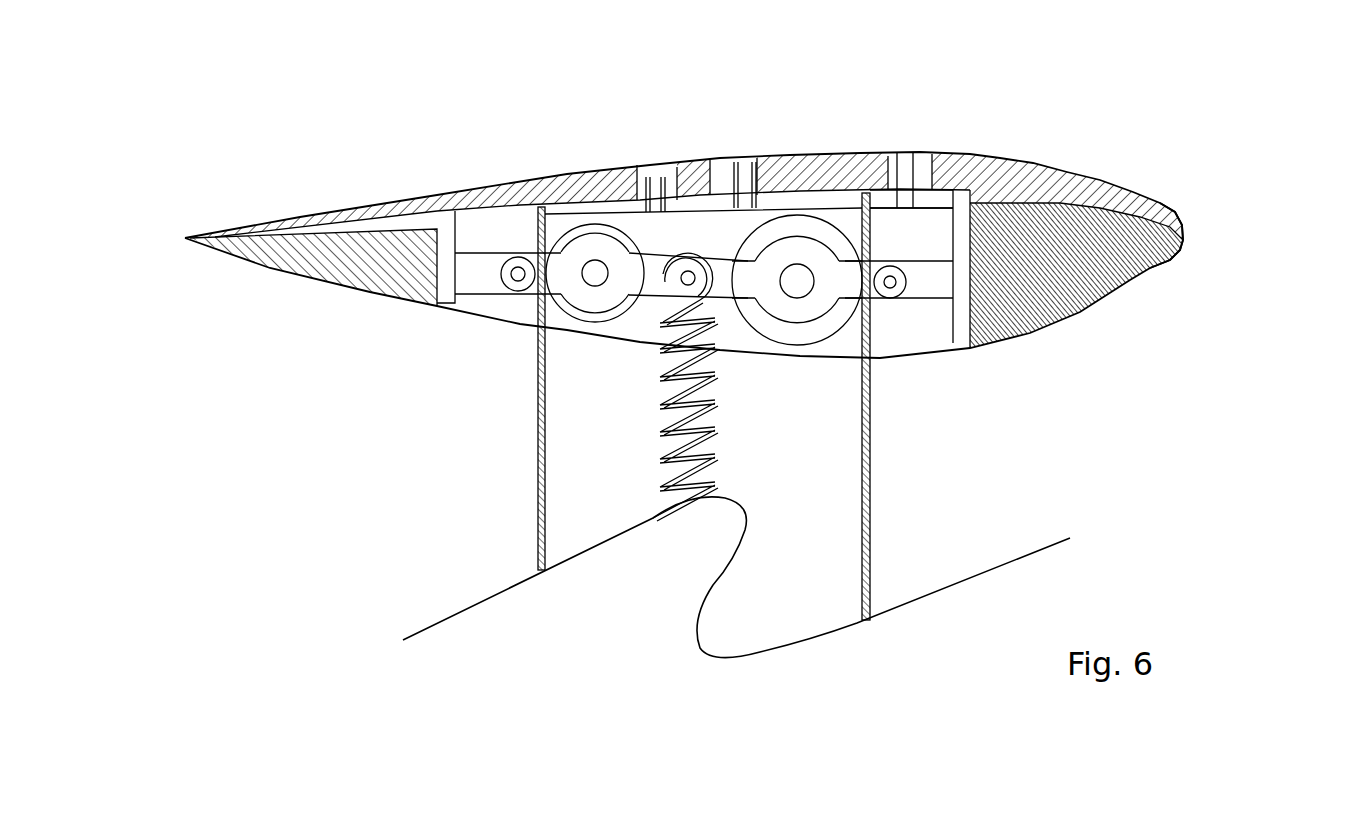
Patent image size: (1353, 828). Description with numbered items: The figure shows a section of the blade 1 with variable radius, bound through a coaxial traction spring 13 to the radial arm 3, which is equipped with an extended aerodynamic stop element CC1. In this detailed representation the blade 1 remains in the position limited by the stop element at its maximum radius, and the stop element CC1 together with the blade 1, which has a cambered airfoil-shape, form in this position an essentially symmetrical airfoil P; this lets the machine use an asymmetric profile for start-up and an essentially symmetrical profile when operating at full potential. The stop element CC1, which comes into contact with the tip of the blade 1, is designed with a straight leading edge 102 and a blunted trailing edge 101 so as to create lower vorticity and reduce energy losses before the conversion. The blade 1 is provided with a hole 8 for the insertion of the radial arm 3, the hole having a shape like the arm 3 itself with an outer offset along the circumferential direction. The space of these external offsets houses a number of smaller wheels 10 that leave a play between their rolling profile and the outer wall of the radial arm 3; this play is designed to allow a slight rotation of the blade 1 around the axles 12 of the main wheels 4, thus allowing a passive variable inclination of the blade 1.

The symmetrical airfoil P is at (669, 241).
The trailing edge 101 is at (166, 262).
The leading edge 102 is at (1218, 244).
The extended stop element CC1 is at (397, 213).
The blade 1 is at (1105, 282).
The radial arm 3 is at (867, 537).
The main wheels 4 is at (693, 364).
The hole 8 is at (923, 220).
The smaller wheels 10 is at (512, 283).
The axles 12 is at (595, 273).
The coaxial traction spring 13 is at (653, 518).